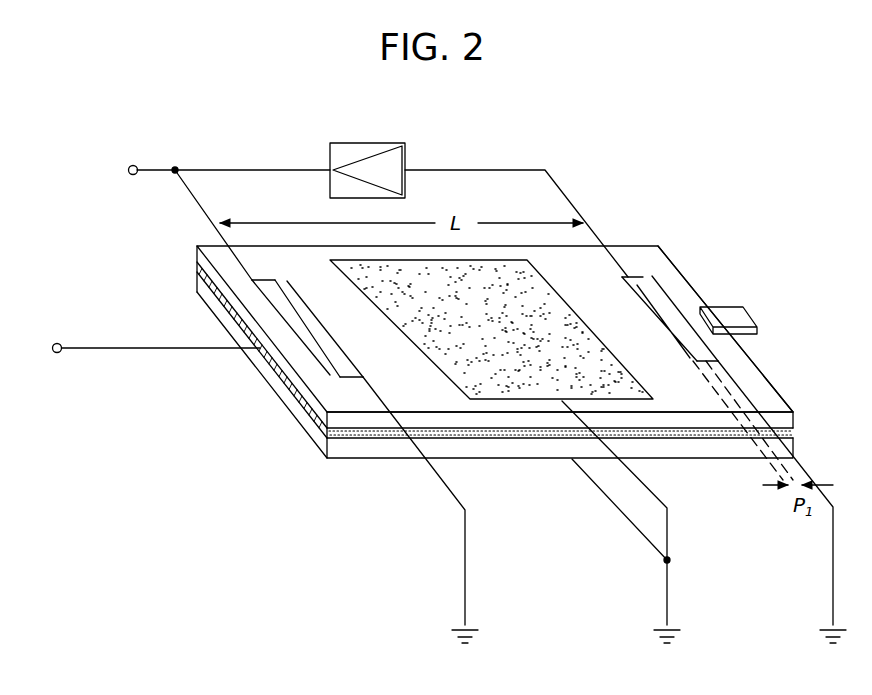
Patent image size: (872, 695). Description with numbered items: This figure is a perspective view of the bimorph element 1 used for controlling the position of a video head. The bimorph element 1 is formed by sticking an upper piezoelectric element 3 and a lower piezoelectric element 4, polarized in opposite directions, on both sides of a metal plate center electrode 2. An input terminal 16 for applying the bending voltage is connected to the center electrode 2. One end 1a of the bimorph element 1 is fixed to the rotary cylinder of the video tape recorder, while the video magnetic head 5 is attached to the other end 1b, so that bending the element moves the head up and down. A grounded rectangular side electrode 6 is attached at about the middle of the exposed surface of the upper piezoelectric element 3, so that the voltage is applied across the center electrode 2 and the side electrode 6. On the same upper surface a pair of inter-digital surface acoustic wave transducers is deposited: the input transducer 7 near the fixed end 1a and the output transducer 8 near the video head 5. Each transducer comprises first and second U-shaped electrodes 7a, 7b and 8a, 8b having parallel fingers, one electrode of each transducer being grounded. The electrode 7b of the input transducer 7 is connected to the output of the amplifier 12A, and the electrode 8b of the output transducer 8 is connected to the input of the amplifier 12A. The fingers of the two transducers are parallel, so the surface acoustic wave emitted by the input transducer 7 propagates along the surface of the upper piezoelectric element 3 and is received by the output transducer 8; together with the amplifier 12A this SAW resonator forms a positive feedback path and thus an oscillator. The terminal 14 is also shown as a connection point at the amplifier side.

The bimorph element 1 is at (184, 262).
The one end of the bimorph element 1a is at (257, 357).
The other end of the bimorph element 1b is at (766, 372).
The center electrode 2 is at (292, 398).
The upper piezoelectric element 3 is at (375, 424).
The lower piezoelectric element 4 is at (348, 454).
The video magnetic head 5 is at (742, 318).
The side electrode 6 is at (566, 293).
The input transducer 7 is at (314, 325).
The first U-shaped electrode of transducer 7 7a is at (366, 377).
The second U-shaped electrode of transducer 7 7b is at (268, 280).
The output transducer 8 is at (668, 292).
The first U-shaped electrode of transducer 8 8a is at (724, 362).
The second U-shaped electrode of transducer 8 8b is at (636, 277).
The amplifier 12A is at (376, 143).
The terminal 14 is at (133, 165).
The input terminal 16 is at (57, 343).